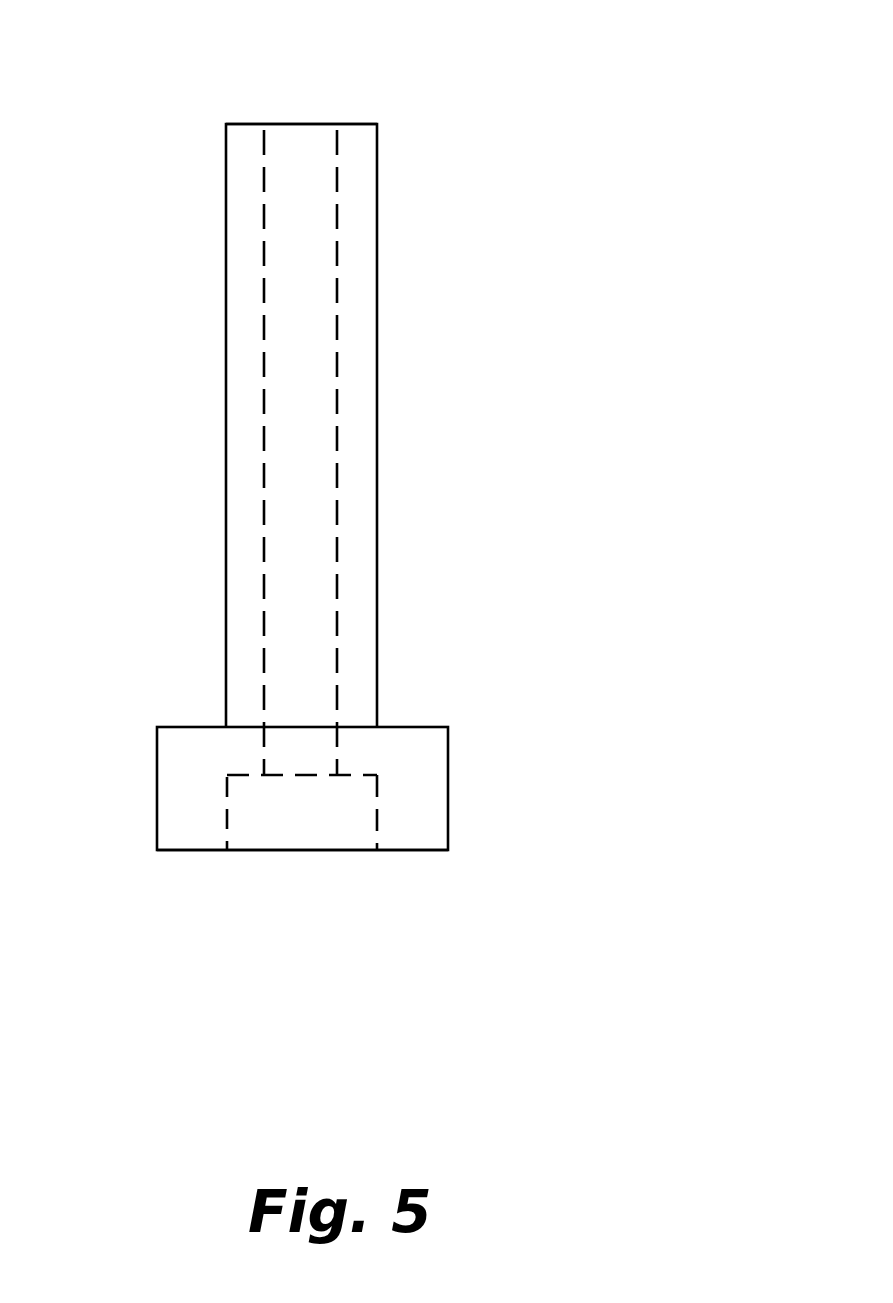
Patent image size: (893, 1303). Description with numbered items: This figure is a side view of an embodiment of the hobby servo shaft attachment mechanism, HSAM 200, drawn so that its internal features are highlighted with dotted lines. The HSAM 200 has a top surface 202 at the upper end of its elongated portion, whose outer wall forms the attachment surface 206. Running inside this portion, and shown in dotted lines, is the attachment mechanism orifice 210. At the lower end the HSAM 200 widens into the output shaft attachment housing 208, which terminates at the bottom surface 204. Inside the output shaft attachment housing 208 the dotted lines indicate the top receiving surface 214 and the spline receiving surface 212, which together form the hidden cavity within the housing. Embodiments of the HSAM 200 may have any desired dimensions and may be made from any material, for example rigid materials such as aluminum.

The HSAM 200 is at (235, 923).
The top surface 202 is at (308, 124).
The bottom surface 204 is at (413, 850).
The attachment surface 206 is at (362, 502).
The output shaft attachment housing 208 is at (427, 768).
The attachment mechanism orifice 210 is at (310, 312).
The spline receiving surface 212 is at (342, 793).
The top receiving surface 214 is at (238, 775).